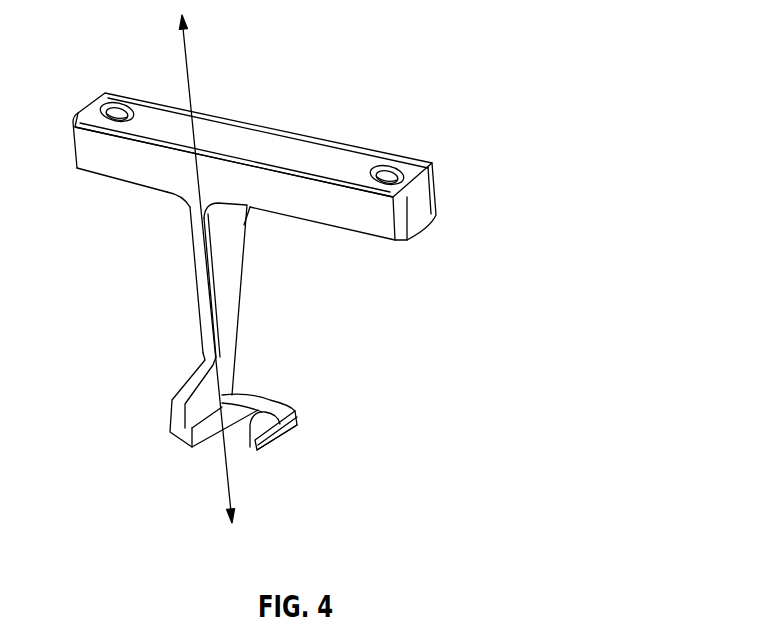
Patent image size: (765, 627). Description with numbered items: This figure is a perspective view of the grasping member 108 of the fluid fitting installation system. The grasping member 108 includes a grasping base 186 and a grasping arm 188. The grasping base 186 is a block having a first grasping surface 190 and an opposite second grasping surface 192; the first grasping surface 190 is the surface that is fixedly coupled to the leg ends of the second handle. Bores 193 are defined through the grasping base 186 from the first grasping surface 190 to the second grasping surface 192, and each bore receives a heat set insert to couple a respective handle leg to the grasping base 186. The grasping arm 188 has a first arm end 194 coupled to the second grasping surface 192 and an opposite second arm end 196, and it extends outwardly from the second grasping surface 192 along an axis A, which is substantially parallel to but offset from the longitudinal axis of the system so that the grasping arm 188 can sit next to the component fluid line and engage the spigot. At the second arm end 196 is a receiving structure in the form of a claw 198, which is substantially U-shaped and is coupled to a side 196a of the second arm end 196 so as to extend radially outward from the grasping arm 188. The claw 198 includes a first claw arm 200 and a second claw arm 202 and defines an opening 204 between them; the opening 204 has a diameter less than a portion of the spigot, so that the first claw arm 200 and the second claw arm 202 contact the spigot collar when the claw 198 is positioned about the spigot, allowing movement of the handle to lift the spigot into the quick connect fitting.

The grasping member 108 is at (485, 73).
The grasping base 186 is at (472, 186).
The grasping arm 188 is at (394, 325).
The first grasping surface 190 is at (292, 146).
The second grasping surface 192 is at (360, 235).
The bores 193 is at (104, 95).
The first arm end 194 is at (190, 203).
The second arm end 196 is at (240, 393).
The side of the second arm end 196a is at (248, 400).
The claw 198 is at (297, 433).
The first claw arm 200 is at (277, 440).
The second claw arm 202 is at (172, 435).
The opening 204 is at (250, 448).
The axis A is at (188, 68).